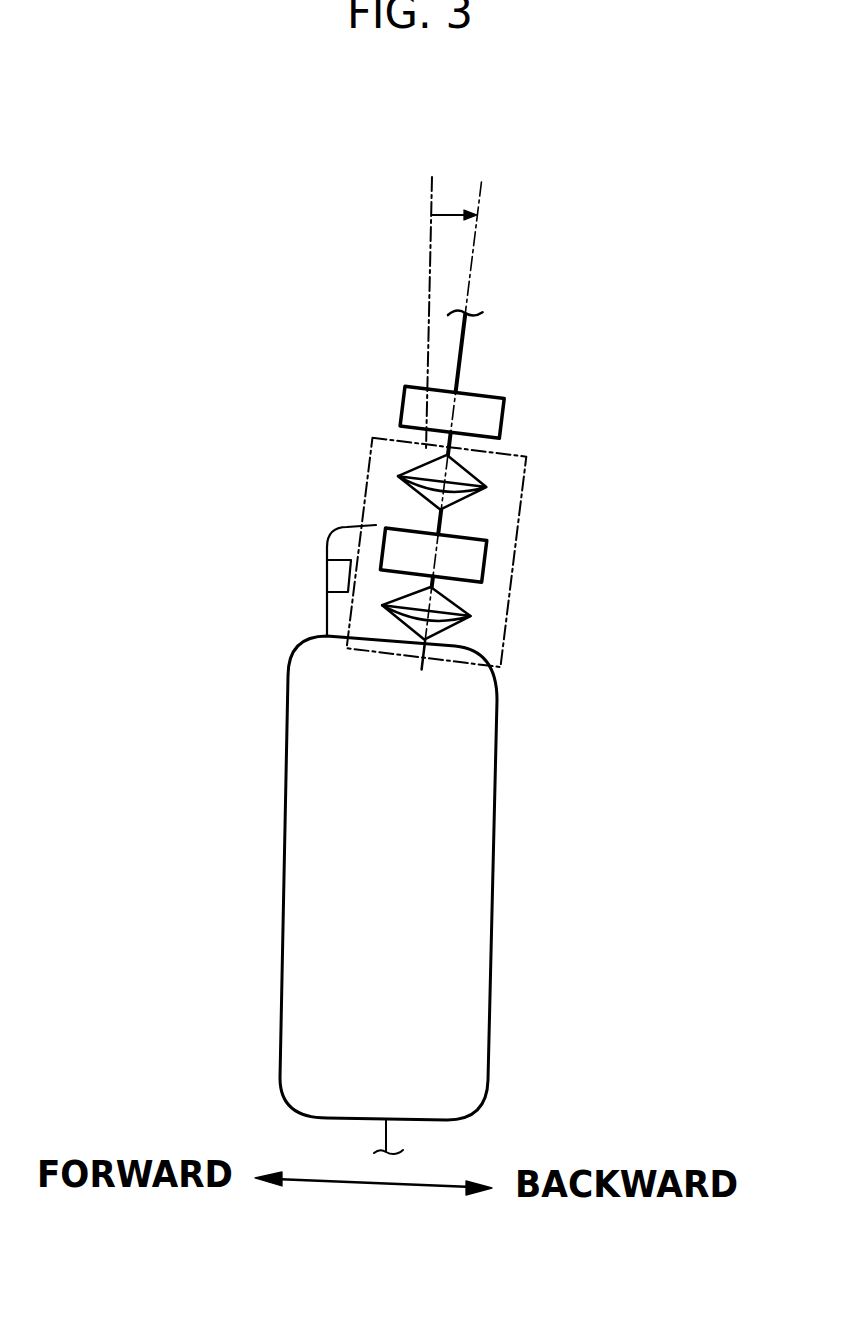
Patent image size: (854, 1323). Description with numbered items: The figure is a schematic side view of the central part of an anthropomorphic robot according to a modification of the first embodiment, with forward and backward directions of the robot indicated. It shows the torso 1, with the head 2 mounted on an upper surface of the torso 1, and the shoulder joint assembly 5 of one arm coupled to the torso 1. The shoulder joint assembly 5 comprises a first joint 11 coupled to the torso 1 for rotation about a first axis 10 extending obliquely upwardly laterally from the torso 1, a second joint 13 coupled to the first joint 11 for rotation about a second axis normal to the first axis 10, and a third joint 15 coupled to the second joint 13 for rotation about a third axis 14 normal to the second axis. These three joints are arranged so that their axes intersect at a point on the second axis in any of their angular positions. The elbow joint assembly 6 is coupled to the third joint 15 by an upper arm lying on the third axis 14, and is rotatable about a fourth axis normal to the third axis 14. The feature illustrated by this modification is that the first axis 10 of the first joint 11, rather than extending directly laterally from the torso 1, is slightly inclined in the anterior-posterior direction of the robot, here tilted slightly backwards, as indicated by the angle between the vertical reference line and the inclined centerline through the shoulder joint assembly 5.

The torso 1 is at (493, 870).
The head 2 is at (325, 616).
The shoulder joint assembly 5 is at (513, 565).
The elbow joint assembly 6 is at (400, 390).
The first axis 10 is at (450, 642).
The first joint 11 is at (470, 611).
The second joint 13 is at (487, 530).
The third axis 14 is at (427, 520).
The third joint 15 is at (463, 476).